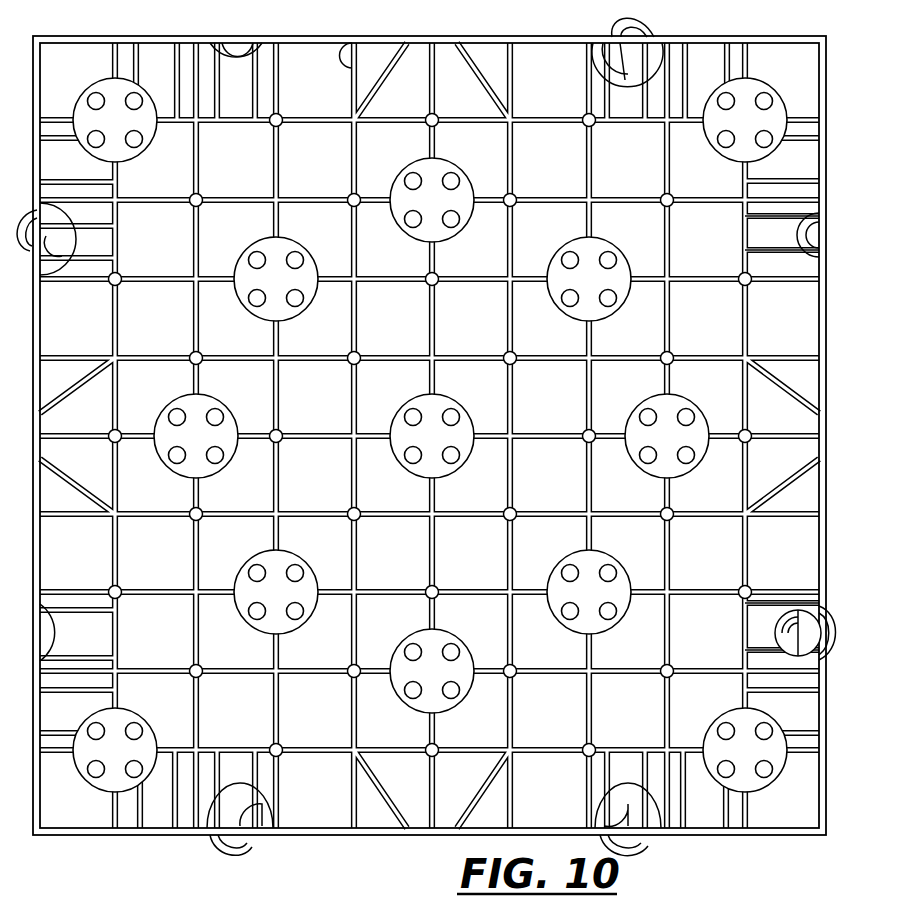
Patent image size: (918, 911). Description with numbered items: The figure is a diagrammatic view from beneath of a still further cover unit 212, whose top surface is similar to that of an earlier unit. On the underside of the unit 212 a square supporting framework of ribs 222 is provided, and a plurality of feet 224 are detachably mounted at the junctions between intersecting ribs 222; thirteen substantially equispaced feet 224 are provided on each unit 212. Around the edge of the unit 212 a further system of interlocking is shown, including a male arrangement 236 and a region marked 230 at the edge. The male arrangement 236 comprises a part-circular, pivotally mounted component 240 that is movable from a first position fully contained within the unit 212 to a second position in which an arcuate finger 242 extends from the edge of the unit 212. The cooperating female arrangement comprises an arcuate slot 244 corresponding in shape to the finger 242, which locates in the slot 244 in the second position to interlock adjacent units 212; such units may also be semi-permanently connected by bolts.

The cover unit 212 is at (642, 844).
The ribs 222 is at (278, 70).
The feet 224 is at (288, 633).
The latch recess 230 is at (836, 210).
The male arrangement 236 is at (839, 606).
The pivotally mounted component 240 is at (793, 635).
The arcuate finger 242 is at (836, 654).
The arcuate slot 244 is at (815, 243).